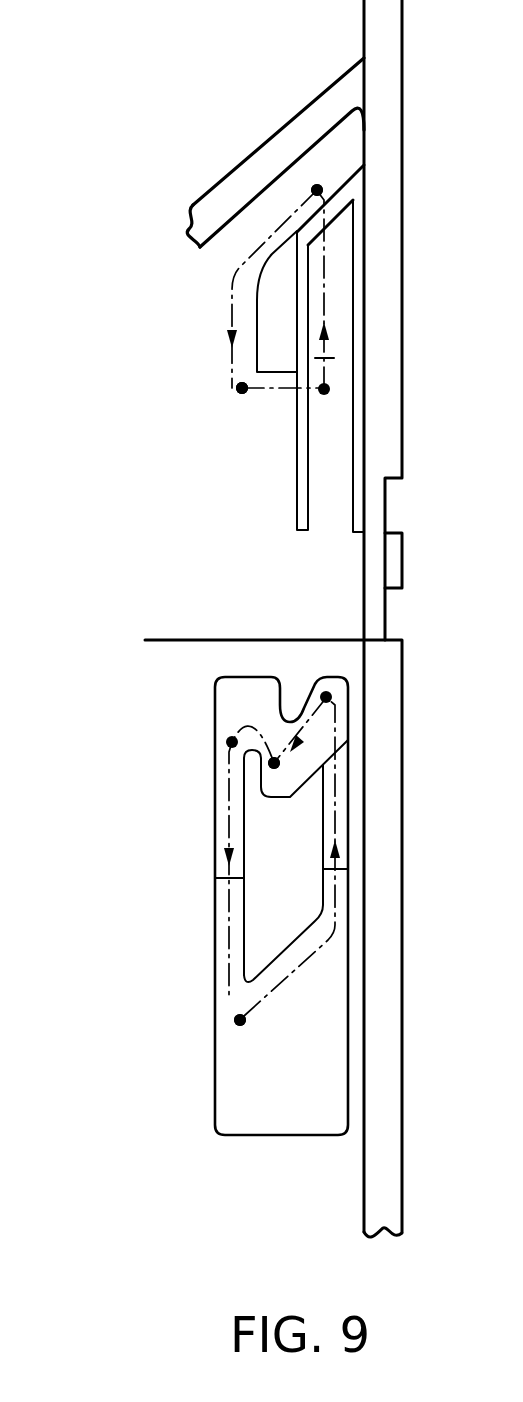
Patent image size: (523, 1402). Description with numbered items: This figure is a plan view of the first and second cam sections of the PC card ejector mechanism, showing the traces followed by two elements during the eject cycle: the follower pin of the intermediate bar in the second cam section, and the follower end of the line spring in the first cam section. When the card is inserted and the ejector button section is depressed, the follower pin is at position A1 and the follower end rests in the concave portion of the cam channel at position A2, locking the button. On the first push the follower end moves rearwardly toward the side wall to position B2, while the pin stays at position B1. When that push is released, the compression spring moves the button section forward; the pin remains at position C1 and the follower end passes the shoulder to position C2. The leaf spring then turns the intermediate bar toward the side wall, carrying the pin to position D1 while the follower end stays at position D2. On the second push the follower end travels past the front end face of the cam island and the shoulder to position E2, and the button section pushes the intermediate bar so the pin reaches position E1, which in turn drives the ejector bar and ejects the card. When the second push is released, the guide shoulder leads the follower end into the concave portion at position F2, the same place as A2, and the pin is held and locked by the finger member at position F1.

The follower pin position E1 is at (317, 190).
The follower pin position F1 is at (317, 190).
The follower pin position A1 is at (242, 388).
The follower pin position B1 is at (242, 388).
The follower pin position C1 is at (242, 388).
The follower pin position D1 is at (324, 390).
The follower end position F2 is at (274, 762).
The follower end position A2 is at (274, 762).
The follower end position B2 is at (232, 742).
The follower end position E2 is at (327, 697).
The follower end position C2 is at (240, 1020).
The follower end position D2 is at (240, 1020).